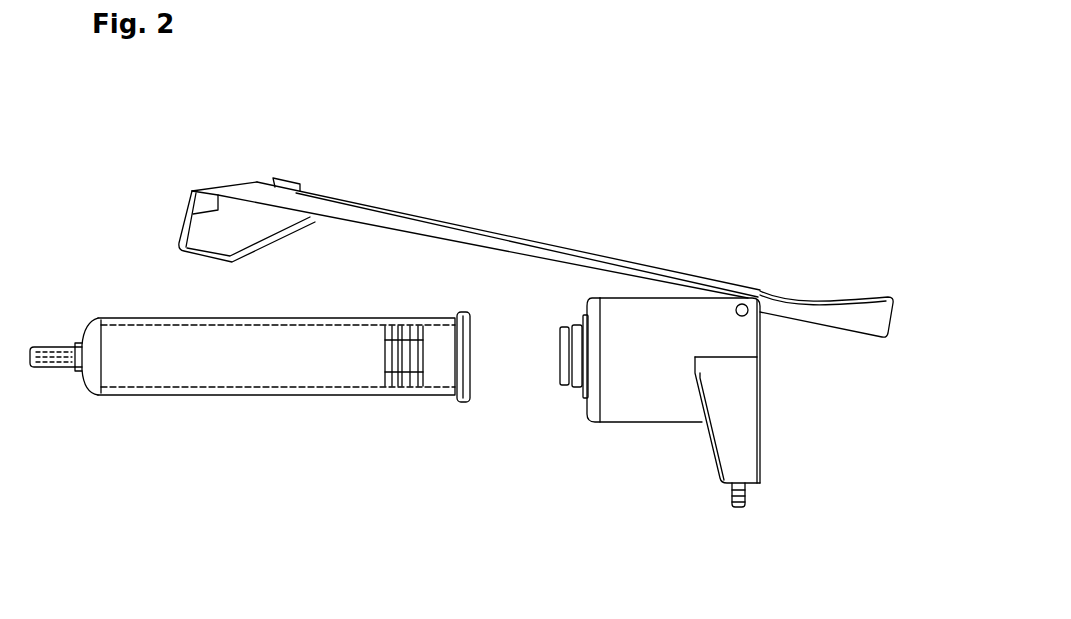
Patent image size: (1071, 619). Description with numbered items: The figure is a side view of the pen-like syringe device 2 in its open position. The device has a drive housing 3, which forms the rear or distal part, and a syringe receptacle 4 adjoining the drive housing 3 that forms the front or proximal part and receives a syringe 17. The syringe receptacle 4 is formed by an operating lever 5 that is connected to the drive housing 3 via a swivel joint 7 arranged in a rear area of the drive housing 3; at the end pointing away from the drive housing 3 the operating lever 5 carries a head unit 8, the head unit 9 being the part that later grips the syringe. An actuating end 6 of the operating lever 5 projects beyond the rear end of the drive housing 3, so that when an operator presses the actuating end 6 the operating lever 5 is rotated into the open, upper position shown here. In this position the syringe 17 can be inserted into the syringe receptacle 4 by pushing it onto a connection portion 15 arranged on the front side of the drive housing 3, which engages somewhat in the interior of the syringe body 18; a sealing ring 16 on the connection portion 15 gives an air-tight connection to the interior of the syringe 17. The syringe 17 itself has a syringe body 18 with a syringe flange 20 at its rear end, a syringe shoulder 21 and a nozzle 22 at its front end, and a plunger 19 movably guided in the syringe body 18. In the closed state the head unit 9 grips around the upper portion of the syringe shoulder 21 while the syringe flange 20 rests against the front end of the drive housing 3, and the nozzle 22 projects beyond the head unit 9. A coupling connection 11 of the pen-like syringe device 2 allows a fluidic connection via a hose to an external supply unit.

The pen-like syringe device 2 is at (632, 141).
The drive housing 3 is at (648, 416).
The syringe receptacle 4 is at (375, 161).
The operating lever 5 is at (462, 232).
The actuating end 6 is at (845, 316).
The swivel joint 7 is at (737, 316).
The head unit 8 is at (293, 176).
The head unit 9 is at (203, 230).
The coupling connection 11 is at (735, 506).
The connection portion 15 is at (563, 350).
The sealing ring 16 is at (575, 386).
The syringe 17 is at (277, 438).
The syringe body 18 is at (190, 388).
The plunger 19 is at (402, 374).
The syringe flange 20 is at (465, 390).
The syringe shoulder 21 is at (83, 388).
The nozzle 22 is at (54, 345).